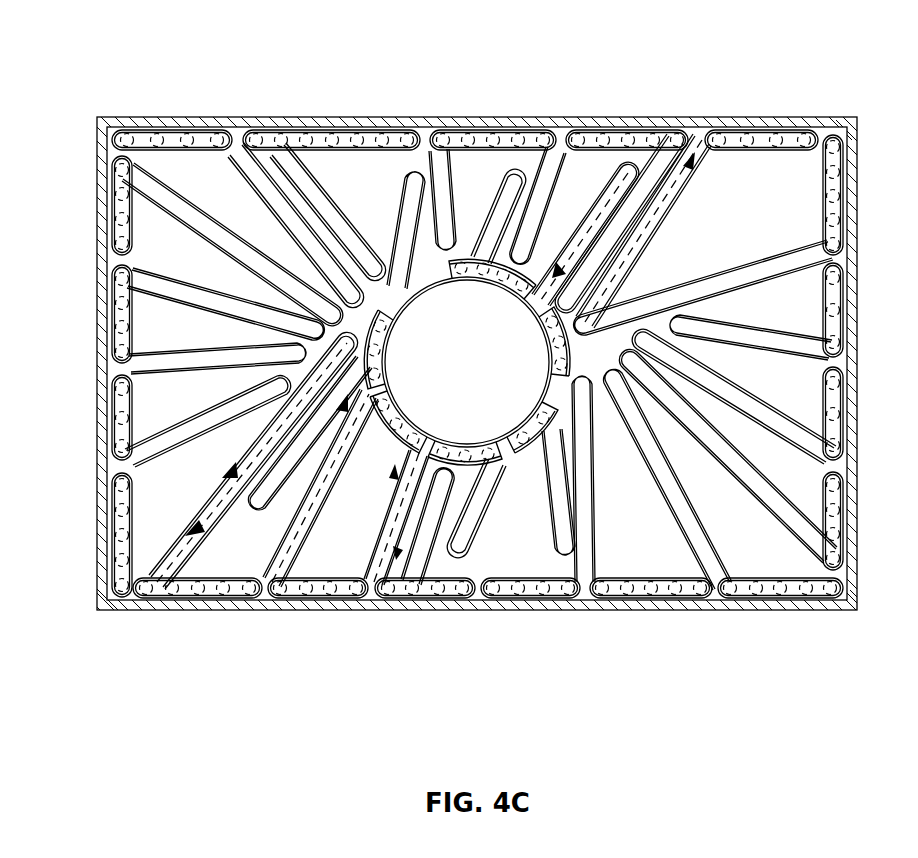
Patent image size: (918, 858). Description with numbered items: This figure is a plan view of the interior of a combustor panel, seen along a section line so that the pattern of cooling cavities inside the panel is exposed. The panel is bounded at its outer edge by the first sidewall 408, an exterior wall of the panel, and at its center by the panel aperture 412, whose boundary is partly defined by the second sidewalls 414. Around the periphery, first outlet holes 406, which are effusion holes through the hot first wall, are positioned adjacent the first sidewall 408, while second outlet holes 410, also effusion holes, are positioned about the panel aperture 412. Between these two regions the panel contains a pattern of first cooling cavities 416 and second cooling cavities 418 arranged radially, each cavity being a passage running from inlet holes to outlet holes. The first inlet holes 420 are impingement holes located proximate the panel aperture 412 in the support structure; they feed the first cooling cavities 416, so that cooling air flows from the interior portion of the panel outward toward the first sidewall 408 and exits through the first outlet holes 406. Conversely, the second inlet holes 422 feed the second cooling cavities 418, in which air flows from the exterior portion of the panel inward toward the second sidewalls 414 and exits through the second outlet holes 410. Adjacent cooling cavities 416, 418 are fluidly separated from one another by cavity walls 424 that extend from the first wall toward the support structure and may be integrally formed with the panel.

The first outlet holes 406 is at (750, 140).
The first sidewall 408 is at (97, 362).
The second outlet holes 410 is at (246, 196).
The panel aperture 412 is at (491, 378).
The second sidewalls 414 is at (386, 366).
The first cooling cavities 416 is at (678, 207).
The second cooling cavities 418 is at (480, 458).
The first inlet holes 420 is at (277, 312).
The second inlet holes 422 is at (628, 173).
The cavity walls 424 is at (610, 222).